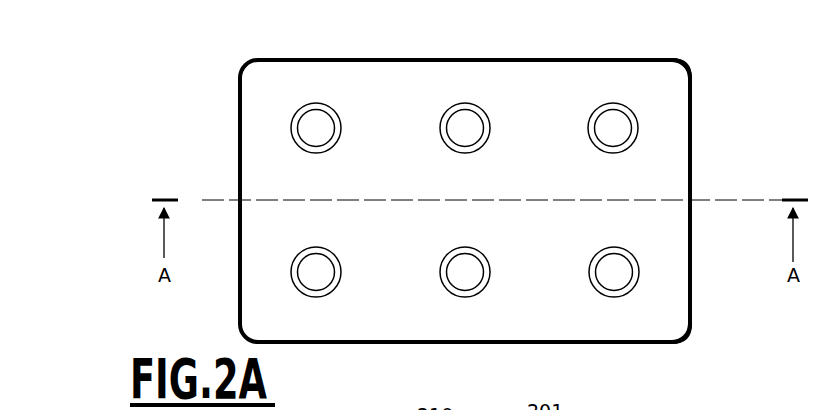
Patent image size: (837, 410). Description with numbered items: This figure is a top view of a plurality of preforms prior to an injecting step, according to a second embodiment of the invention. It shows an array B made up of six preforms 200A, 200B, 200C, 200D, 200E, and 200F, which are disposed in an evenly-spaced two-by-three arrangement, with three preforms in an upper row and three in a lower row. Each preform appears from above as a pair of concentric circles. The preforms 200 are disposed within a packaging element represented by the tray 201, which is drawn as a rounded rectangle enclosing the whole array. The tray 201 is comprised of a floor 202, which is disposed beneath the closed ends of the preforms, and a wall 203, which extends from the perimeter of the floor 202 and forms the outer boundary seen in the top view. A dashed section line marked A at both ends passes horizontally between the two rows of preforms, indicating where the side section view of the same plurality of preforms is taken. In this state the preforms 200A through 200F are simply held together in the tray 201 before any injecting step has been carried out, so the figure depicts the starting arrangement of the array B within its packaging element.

The preforms 200 is at (288, 90).
The tray 201 is at (693, 228).
The floor 202 is at (543, 78).
The wall 203 is at (689, 343).
The array B is at (702, 76).
The preform 200A is at (292, 264).
The preform 200B is at (478, 296).
The preform 200C is at (640, 267).
The preform 200D is at (291, 131).
The preform 200E is at (451, 104).
The preform 200F is at (639, 125).